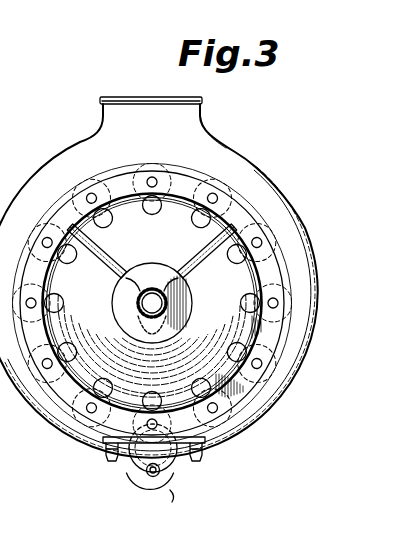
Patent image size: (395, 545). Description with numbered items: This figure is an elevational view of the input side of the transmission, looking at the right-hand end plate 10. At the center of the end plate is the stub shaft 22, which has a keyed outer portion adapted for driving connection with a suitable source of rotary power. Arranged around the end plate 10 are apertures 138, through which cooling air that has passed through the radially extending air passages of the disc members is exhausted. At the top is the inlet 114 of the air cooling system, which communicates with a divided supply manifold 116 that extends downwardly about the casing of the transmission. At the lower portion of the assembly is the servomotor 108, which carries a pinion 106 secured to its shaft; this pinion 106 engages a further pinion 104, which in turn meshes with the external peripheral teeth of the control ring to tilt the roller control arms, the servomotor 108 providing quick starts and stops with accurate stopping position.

The right-hand end plate 10 is at (225, 408).
The stub shaft 22 is at (166, 310).
The pinion 104 is at (199, 463).
The pinion 106 is at (134, 483).
The servomotor 108 is at (149, 498).
The inlet 114 is at (203, 120).
The divided supply manifold 116 is at (281, 390).
The apertures 138 is at (238, 246).